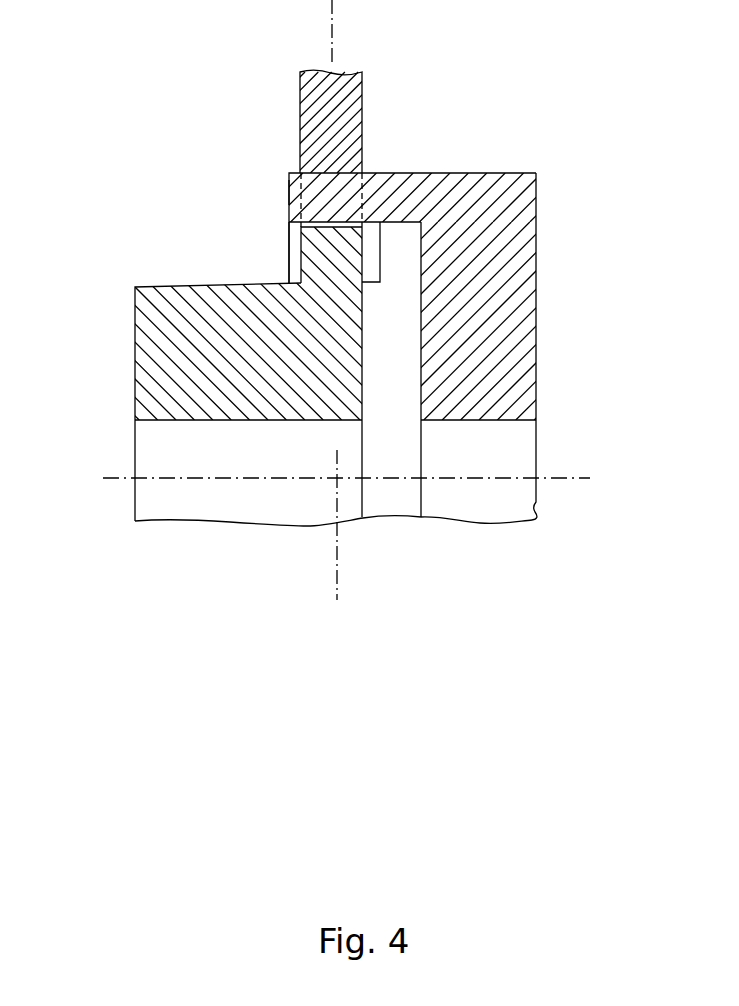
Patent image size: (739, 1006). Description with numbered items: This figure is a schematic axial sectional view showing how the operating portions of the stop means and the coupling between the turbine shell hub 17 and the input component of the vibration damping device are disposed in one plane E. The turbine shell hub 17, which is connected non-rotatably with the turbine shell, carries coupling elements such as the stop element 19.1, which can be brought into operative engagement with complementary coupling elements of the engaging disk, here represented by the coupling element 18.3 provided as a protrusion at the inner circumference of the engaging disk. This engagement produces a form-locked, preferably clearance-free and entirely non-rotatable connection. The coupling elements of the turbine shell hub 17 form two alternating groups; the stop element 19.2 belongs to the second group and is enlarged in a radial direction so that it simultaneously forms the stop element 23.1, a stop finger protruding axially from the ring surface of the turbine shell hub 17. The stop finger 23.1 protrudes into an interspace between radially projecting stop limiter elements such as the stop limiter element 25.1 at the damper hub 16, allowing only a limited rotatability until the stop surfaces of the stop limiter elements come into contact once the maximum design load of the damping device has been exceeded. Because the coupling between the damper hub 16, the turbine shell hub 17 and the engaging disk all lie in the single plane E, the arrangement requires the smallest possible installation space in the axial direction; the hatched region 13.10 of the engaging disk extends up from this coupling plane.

The plane E is at (333, 31).
The projection 13.10 is at (347, 91).
The stop element 19.1 is at (395, 186).
The coupling element 18.3 is at (288, 192).
The stop element 23.1 is at (202, 246).
The stop element 19.2 is at (298, 237).
The stop limiter element 25.1 is at (317, 272).
The damper hub 16 is at (167, 318).
The turbine shell hub 17 is at (512, 317).